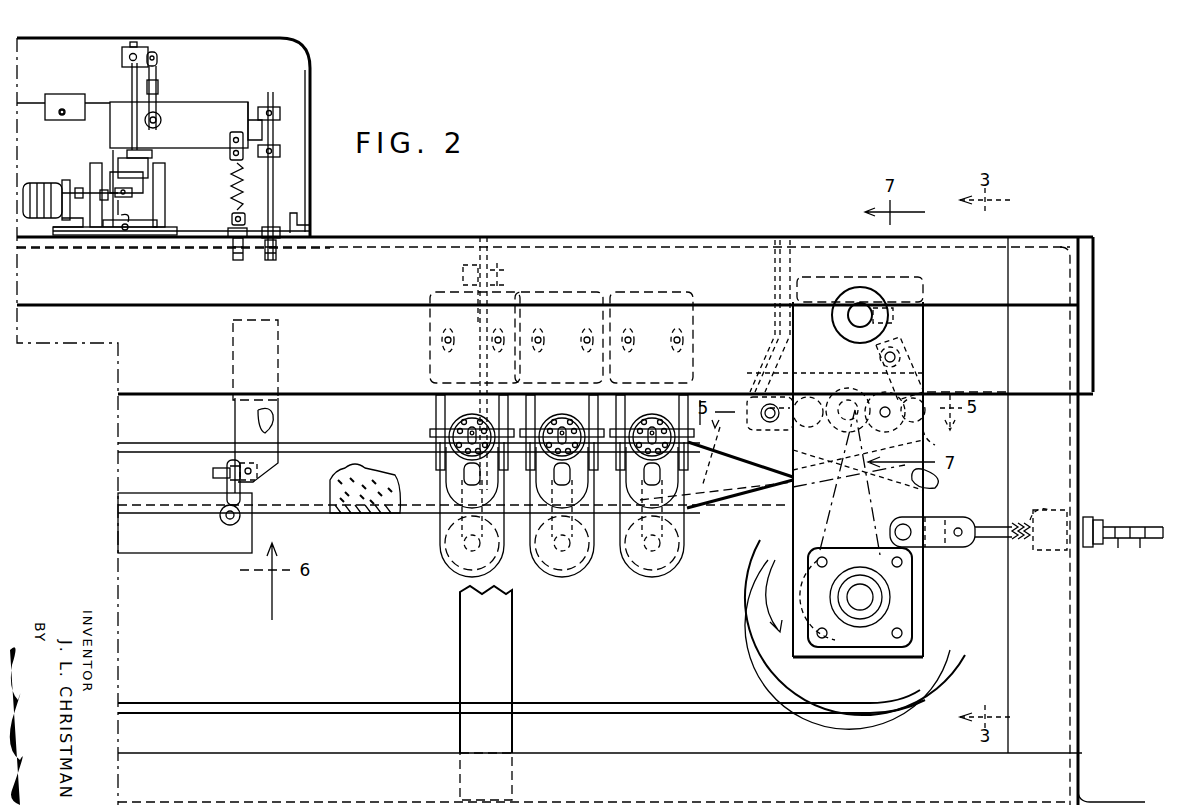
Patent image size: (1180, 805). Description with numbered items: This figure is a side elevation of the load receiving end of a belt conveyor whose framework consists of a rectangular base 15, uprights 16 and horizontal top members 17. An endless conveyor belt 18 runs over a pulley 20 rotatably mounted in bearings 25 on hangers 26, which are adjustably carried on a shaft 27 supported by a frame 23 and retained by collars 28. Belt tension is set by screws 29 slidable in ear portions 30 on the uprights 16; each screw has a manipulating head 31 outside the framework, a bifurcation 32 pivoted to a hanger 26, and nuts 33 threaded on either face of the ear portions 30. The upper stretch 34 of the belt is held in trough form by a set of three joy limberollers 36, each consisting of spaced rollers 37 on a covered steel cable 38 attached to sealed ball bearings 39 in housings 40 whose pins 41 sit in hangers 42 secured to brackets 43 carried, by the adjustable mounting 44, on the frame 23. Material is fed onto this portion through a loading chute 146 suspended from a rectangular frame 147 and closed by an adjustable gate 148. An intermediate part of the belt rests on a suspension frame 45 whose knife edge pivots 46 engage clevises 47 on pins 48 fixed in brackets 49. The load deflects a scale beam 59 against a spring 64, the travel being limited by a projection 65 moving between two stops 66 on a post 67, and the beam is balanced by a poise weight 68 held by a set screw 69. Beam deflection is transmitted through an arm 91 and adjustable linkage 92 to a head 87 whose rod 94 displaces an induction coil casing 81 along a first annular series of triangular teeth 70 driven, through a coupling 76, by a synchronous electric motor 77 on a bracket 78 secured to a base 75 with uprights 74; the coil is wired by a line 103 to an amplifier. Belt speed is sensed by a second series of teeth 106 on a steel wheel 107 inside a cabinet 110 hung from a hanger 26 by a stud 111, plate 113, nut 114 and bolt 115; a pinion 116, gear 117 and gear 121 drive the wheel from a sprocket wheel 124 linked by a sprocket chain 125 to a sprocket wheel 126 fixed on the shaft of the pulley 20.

The rectangular base 15 is at (1082, 777).
The uprights 16 is at (1085, 672).
The horizontal top members 17 is at (372, 236).
The endless conveyor belt 18 is at (150, 445).
The pulley 20 is at (790, 645).
The frame 23 is at (193, 325).
The bearings 25 is at (910, 603).
The hangers 26 is at (935, 482).
The shaft 27 is at (862, 312).
The collars 28 is at (845, 320).
The screws 29 is at (1128, 578).
The ear portions 30 is at (1062, 553).
The manipulating head 31 is at (1153, 525).
The bifurcation 32 is at (970, 550).
The nuts 33 is at (1068, 510).
The upper stretch 34 is at (345, 465).
The joy limberollers 36 is at (636, 285).
The rollers 37 is at (452, 560).
The steel cable 38 is at (474, 425).
The sealed ball bearings 39 is at (462, 415).
The housings 40 is at (454, 464).
The pins 41 is at (430, 430).
The hangers 42 is at (437, 400).
The brackets 43 is at (426, 343).
The adjustable mounting 44 is at (448, 340).
The suspension frame 45 is at (161, 540).
The knife edge pivots 46 is at (225, 505).
The clevises 47 is at (220, 515).
The pins 48 is at (213, 476).
The brackets 49 is at (270, 420).
The scale beam 59 is at (205, 112).
The spring 64 is at (230, 190).
The projection 65 is at (257, 124).
The stops 66 is at (280, 150).
The post 67 is at (271, 200).
The poise weight 68 is at (72, 94).
The set screw 69 is at (61, 110).
The triangular teeth 70 is at (118, 158).
The uprights 74 is at (95, 165).
The base 75 is at (178, 229).
The coupling 76 is at (78, 188).
The synchronous electric motor 77 is at (45, 222).
The bracket 78 is at (64, 190).
The induction coil casing 81 is at (118, 197).
The head 87 is at (148, 50).
The arm 91 is at (122, 50).
The adjustable linkage 92 is at (158, 90).
The rod 94 is at (140, 134).
The line 103 is at (127, 233).
The second series of teeth 106 is at (810, 397).
The steel wheel 107 is at (838, 395).
The cabinet 110 is at (918, 382).
The stud 111 is at (925, 405).
The plate 113 is at (920, 360).
The nut 114 is at (935, 443).
The bolt 115 is at (920, 335).
The pinion 116 is at (805, 420).
The gear 117 is at (870, 475).
The gear 121 is at (893, 395).
The sprocket wheel 124 is at (905, 418).
The sprocket chain 125 is at (888, 500).
The sprocket wheel 126 is at (870, 640).
The loading chute 146 is at (782, 328).
The rectangular frame 147 is at (475, 258).
The gate 148 is at (463, 324).